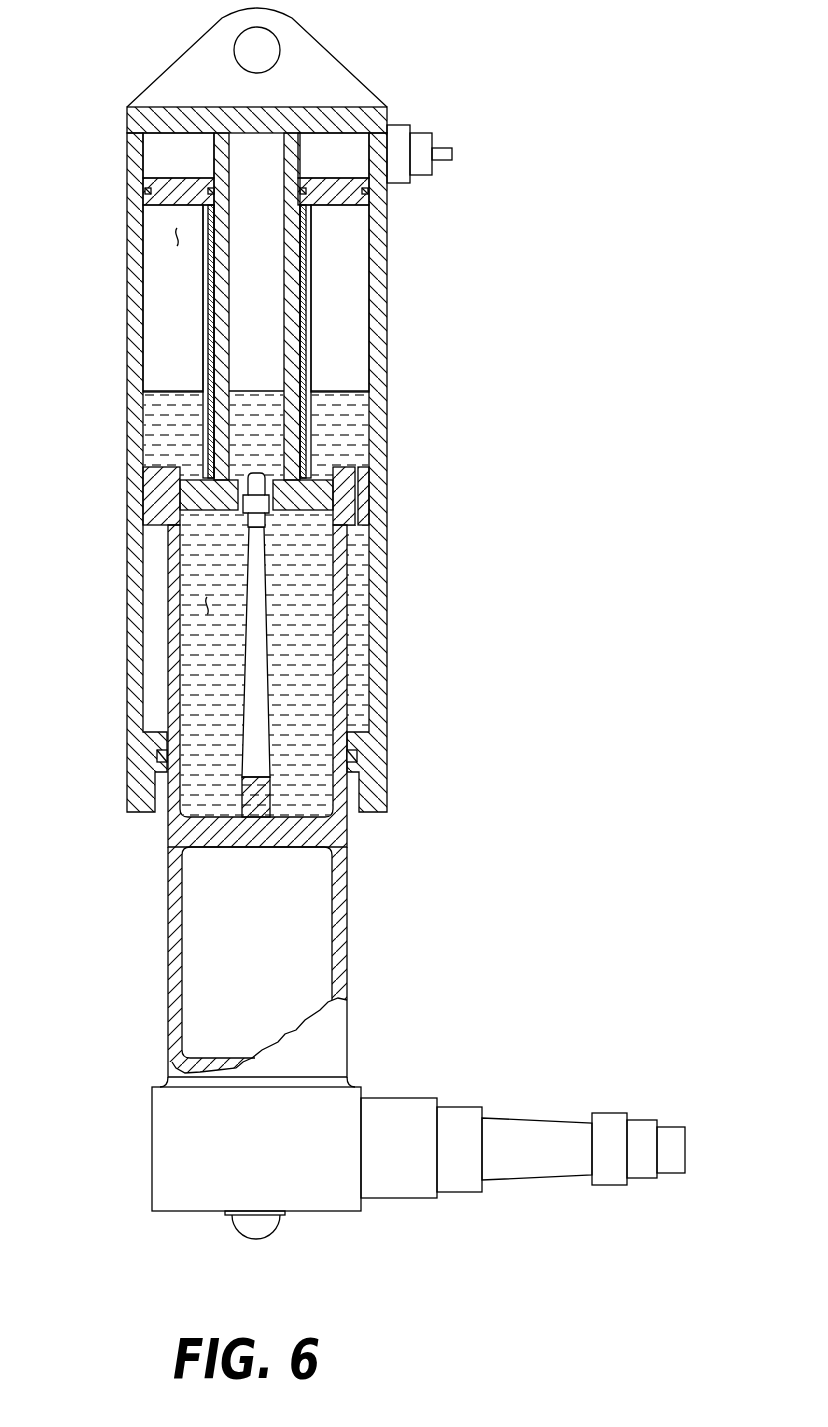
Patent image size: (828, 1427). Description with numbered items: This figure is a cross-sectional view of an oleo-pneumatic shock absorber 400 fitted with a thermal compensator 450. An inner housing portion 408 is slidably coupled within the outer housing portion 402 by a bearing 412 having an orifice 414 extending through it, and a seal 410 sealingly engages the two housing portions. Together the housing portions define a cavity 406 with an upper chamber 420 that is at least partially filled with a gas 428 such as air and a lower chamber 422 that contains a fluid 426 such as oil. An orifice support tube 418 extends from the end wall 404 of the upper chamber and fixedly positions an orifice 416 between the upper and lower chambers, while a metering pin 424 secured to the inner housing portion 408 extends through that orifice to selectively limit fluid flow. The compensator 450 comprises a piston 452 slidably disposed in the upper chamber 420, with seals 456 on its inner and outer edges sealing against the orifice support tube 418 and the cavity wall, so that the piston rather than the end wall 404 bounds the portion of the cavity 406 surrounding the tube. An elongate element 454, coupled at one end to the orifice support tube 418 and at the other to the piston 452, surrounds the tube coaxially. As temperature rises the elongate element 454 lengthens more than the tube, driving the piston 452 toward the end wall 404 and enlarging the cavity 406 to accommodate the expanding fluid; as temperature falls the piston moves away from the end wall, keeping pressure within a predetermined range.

The oleo-pneumatic shock absorber 400 is at (453, 52).
The outer housing portion 402 is at (387, 678).
The end wall 404 is at (317, 137).
The cavity 406 is at (179, 296).
The inner housing portion 408 is at (347, 908).
The seal 410 is at (356, 754).
The bearing 412 is at (338, 468).
The orifice 414 is at (365, 490).
The orifice 416 is at (273, 490).
The orifice support tube 418 is at (283, 365).
The upper chamber 420 is at (180, 363).
The lower chamber 422 is at (205, 677).
The metering pin 424 is at (267, 635).
The fluid 426 is at (205, 607).
The gas 428 is at (177, 237).
The thermal compensator 450 is at (330, 242).
The piston 452 is at (338, 205).
The elongate element 454 is at (310, 295).
The seals 456 is at (209, 190).